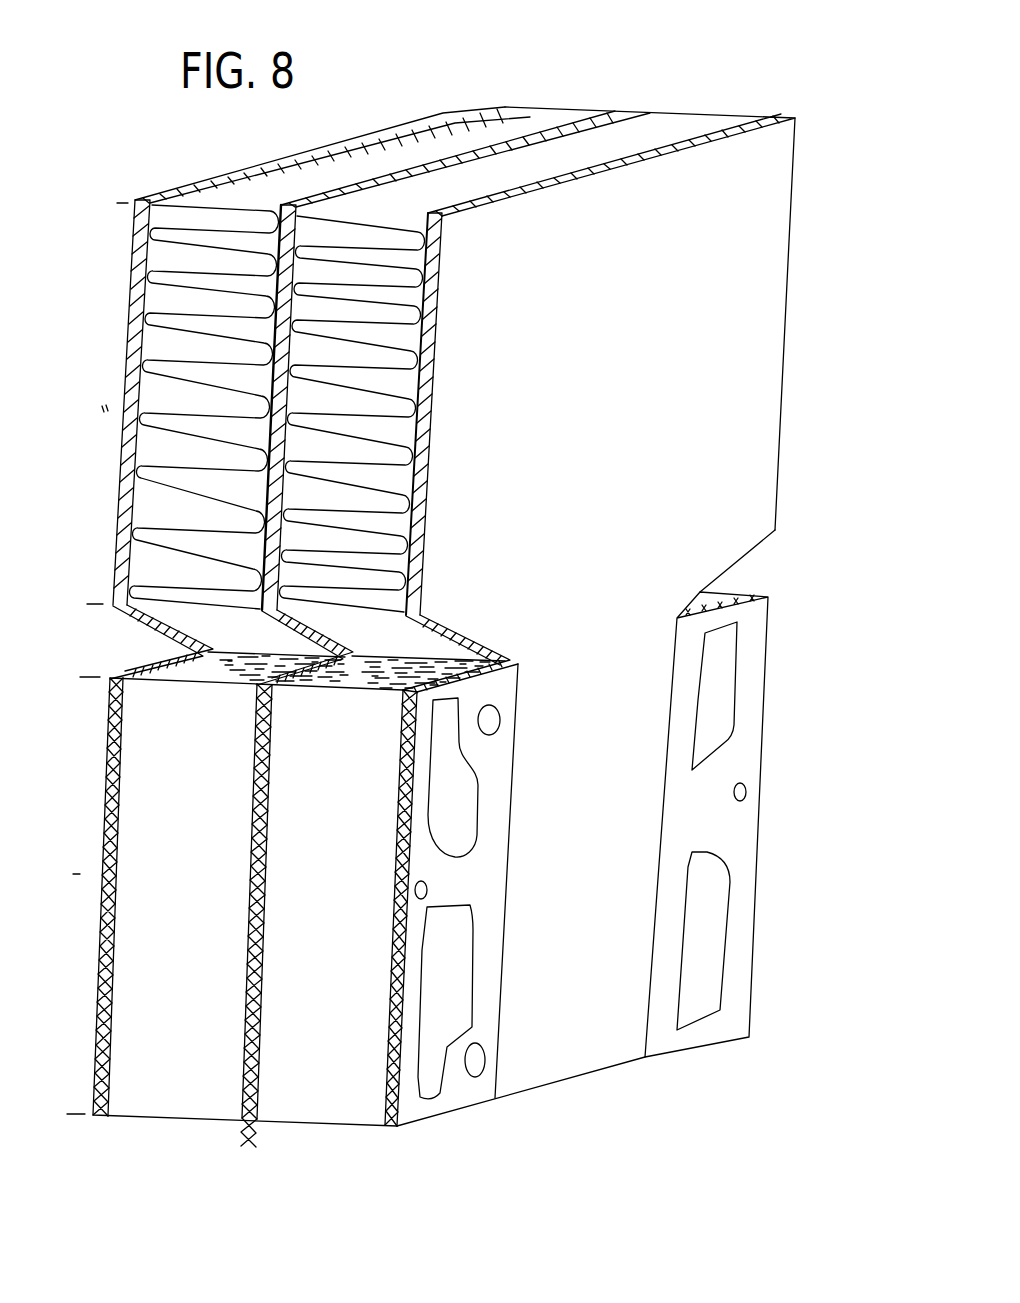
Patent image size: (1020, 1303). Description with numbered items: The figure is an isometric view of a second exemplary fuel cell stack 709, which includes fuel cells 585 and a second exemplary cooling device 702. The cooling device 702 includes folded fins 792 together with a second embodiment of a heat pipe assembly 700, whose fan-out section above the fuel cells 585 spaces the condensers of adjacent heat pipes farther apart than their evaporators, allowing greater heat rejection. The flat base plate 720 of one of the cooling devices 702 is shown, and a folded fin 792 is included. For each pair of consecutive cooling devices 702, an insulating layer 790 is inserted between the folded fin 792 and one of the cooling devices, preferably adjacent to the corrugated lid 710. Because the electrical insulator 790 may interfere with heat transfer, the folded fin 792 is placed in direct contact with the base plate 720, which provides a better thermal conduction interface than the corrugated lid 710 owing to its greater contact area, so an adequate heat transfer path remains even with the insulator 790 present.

The heat pipe assembly 700 is at (448, 113).
The cooling device 702 is at (758, 554).
The fuel cell stack 709 is at (885, 391).
The corrugated lid 710 is at (540, 178).
The base plate 720 is at (300, 237).
The insulating layer 790 is at (409, 477).
The folded fin 792 is at (361, 232).
The fuel cells 585 is at (167, 1118).